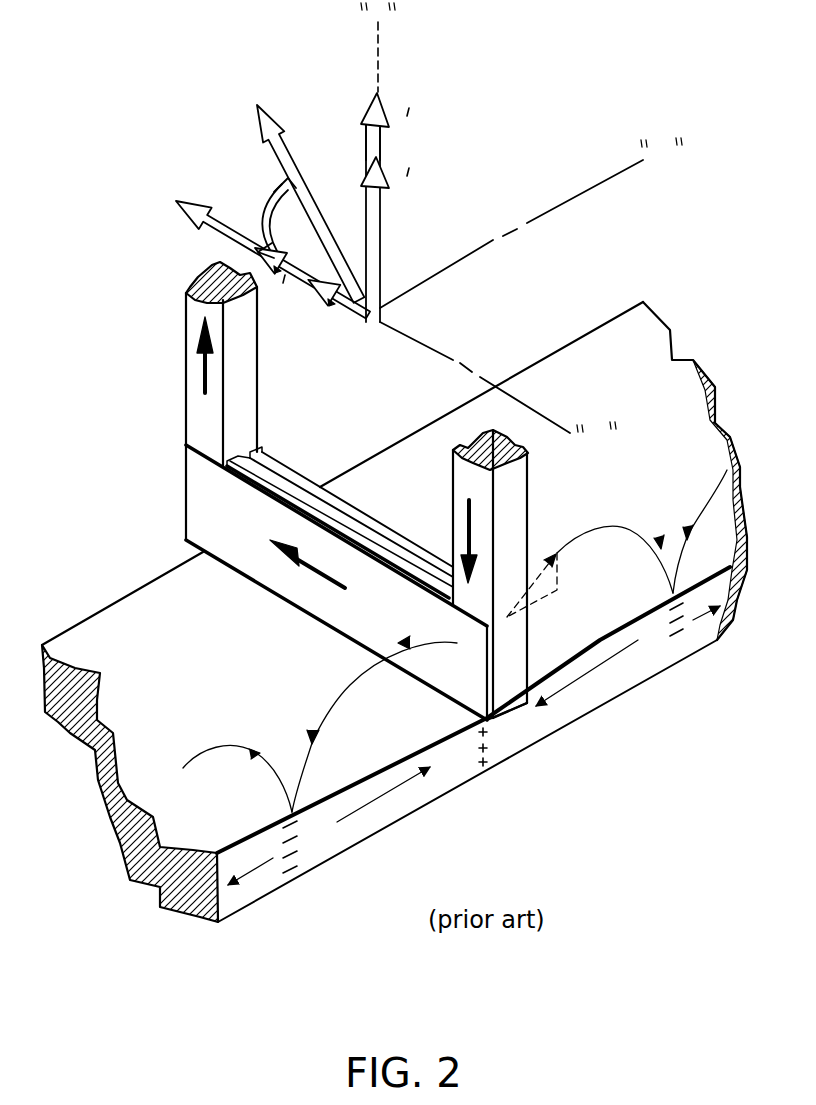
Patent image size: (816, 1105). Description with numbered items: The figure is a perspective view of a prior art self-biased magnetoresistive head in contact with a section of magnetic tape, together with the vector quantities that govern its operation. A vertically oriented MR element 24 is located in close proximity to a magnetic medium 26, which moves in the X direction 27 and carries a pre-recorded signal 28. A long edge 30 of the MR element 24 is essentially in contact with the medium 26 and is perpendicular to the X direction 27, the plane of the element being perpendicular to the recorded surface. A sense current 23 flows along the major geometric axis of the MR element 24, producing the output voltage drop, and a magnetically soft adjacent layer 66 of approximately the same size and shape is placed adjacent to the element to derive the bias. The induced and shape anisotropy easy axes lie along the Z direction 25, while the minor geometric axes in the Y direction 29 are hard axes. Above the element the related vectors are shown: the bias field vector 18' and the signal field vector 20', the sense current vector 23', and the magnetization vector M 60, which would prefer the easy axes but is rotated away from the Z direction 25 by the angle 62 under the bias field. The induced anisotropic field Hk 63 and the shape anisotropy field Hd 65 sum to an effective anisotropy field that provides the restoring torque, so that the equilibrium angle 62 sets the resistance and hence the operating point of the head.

The bias field vector H'b 18' is at (431, 223).
The signal field vector H's 20' is at (431, 126).
The sense current 23 is at (357, 490).
The sense current vector I's 23' is at (278, 298).
The MR element 24 is at (197, 513).
The Z direction 25 is at (527, 405).
The magnetic medium 26 is at (143, 633).
The X direction 27 is at (531, 223).
The pre-recorded signal 28 is at (575, 688).
The Y direction 29 is at (378, 74).
The long edge 30 is at (282, 597).
The magnetization vector M 60 is at (297, 158).
The angle 62 is at (258, 212).
The induced anisotropic field Hk 63 is at (347, 310).
The shape anisotropy field Hd 65 is at (217, 231).
The soft adjacent layer 66 is at (275, 460).